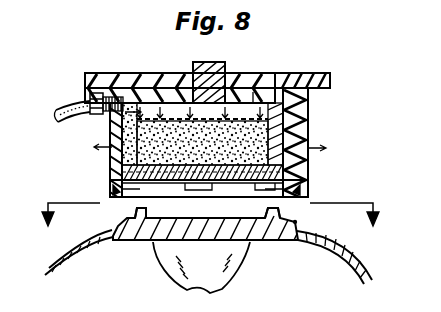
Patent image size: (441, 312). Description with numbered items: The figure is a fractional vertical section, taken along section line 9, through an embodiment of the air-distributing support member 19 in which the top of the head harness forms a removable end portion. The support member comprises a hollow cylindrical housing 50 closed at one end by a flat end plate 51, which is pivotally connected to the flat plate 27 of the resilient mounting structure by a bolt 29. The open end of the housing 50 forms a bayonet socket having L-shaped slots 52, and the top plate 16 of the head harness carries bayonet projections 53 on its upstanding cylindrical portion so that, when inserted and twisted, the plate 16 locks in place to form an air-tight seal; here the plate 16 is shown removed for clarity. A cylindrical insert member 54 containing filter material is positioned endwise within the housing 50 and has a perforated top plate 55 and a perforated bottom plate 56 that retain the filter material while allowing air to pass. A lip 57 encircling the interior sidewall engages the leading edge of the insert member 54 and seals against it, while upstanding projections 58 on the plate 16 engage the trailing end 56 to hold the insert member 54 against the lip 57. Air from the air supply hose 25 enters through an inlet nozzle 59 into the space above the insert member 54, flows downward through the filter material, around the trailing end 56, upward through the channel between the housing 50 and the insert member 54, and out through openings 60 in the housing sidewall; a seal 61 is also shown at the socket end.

The section line 9- 9 is at (210, 226).
The top plate of the head harness 16 is at (165, 230).
The air-distributing support member 19 is at (331, 86).
The air supply hose 25 is at (60, 112).
The flat plate of the resilient mounting structure 27 is at (253, 92).
The bolt 29 is at (213, 66).
The cylindrical housing 50 is at (122, 160).
The flat end plate 51 is at (170, 93).
The L-shaped slots 52 is at (120, 193).
The bayonet projections 53 is at (96, 243).
The cylindrical insert member 54 is at (124, 124).
The perforated top plate 55 is at (290, 125).
The perforated bottom plate 56 is at (146, 190).
The lip 57 is at (162, 86).
The upstanding projections 58 is at (139, 219).
The inlet nozzle 59 is at (90, 100).
The openings 60 is at (122, 150).
The seal 61 is at (118, 186).